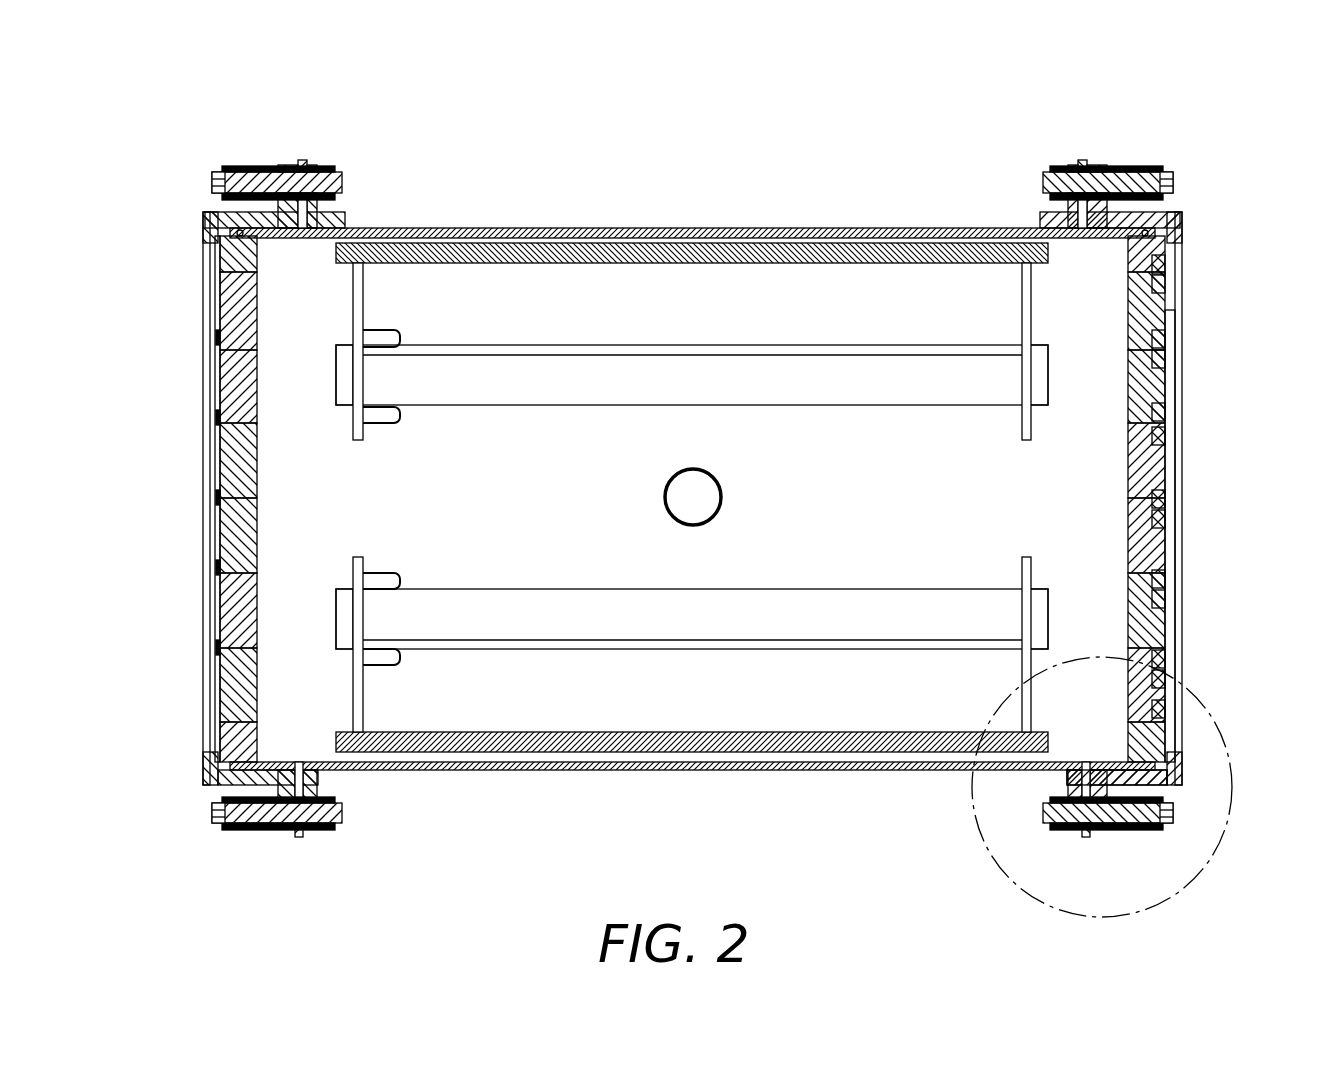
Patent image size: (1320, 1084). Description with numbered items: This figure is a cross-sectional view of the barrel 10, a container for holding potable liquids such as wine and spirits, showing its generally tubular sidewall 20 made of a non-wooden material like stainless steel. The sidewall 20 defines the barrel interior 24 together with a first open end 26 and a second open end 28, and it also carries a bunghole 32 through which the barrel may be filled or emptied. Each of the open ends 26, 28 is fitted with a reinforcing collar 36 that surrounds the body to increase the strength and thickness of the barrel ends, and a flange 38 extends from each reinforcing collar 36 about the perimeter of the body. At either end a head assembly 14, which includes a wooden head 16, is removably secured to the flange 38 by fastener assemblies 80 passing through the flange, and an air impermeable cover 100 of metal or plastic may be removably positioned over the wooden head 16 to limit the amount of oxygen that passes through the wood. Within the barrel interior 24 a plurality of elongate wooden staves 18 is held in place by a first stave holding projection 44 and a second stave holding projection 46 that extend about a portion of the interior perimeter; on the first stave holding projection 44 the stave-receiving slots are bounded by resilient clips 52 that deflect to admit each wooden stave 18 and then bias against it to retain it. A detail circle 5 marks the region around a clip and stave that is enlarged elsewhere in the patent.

The barrel 10 is at (637, 148).
The head assembly 14 is at (230, 213).
The wooden head 16 is at (230, 386).
The wooden stave 18 is at (625, 366).
The sidewall 20 is at (440, 232).
The barrel interior 24 is at (452, 530).
The first open end 26 is at (292, 235).
The second open end 28 is at (1103, 760).
The bunghole 32 is at (678, 498).
The reinforcing collar 36 is at (282, 742).
The flange 38 is at (305, 160).
The first stave holding projection 44 is at (353, 300).
The second stave holding projection 46 is at (1022, 308).
The clip 52 is at (385, 335).
The fastener assembly 80 is at (1130, 828).
The air impermeable cover 100 is at (212, 592).
The detail circle 5 is at (1200, 868).